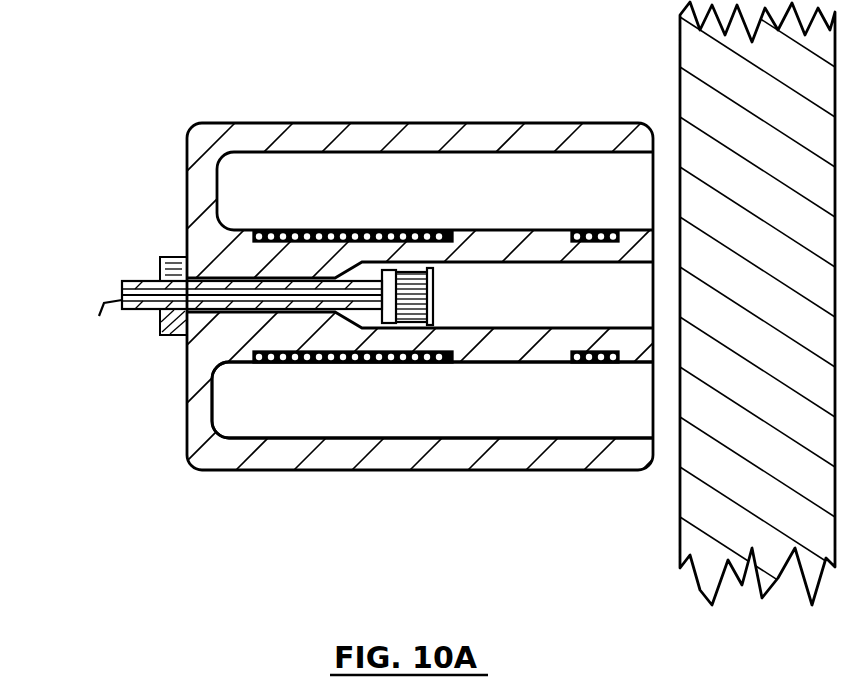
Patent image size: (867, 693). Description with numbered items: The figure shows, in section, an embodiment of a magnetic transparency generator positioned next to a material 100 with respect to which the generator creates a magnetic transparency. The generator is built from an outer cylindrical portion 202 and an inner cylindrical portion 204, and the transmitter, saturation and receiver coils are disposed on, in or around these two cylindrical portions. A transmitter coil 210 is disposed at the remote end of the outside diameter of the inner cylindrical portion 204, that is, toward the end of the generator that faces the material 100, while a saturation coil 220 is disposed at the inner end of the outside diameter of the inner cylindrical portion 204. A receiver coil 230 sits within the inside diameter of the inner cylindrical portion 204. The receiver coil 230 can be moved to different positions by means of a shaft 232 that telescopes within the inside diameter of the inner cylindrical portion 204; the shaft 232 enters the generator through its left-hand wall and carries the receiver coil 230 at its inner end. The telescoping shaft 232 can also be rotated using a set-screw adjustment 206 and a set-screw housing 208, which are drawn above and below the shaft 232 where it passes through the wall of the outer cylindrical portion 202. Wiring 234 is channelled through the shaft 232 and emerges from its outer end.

The material 100 is at (677, 493).
The outer cylindrical portion 202 is at (386, 472).
The inner cylindrical portion 204 is at (504, 363).
The set-screw adjustment 206 is at (178, 256).
The set-screw housing 208 is at (165, 337).
The transmitter coil 210 is at (600, 230).
The saturation coil 220 is at (411, 230).
The receiver coil 230 is at (432, 290).
The shaft 232 is at (131, 281).
The wiring 234 is at (106, 301).